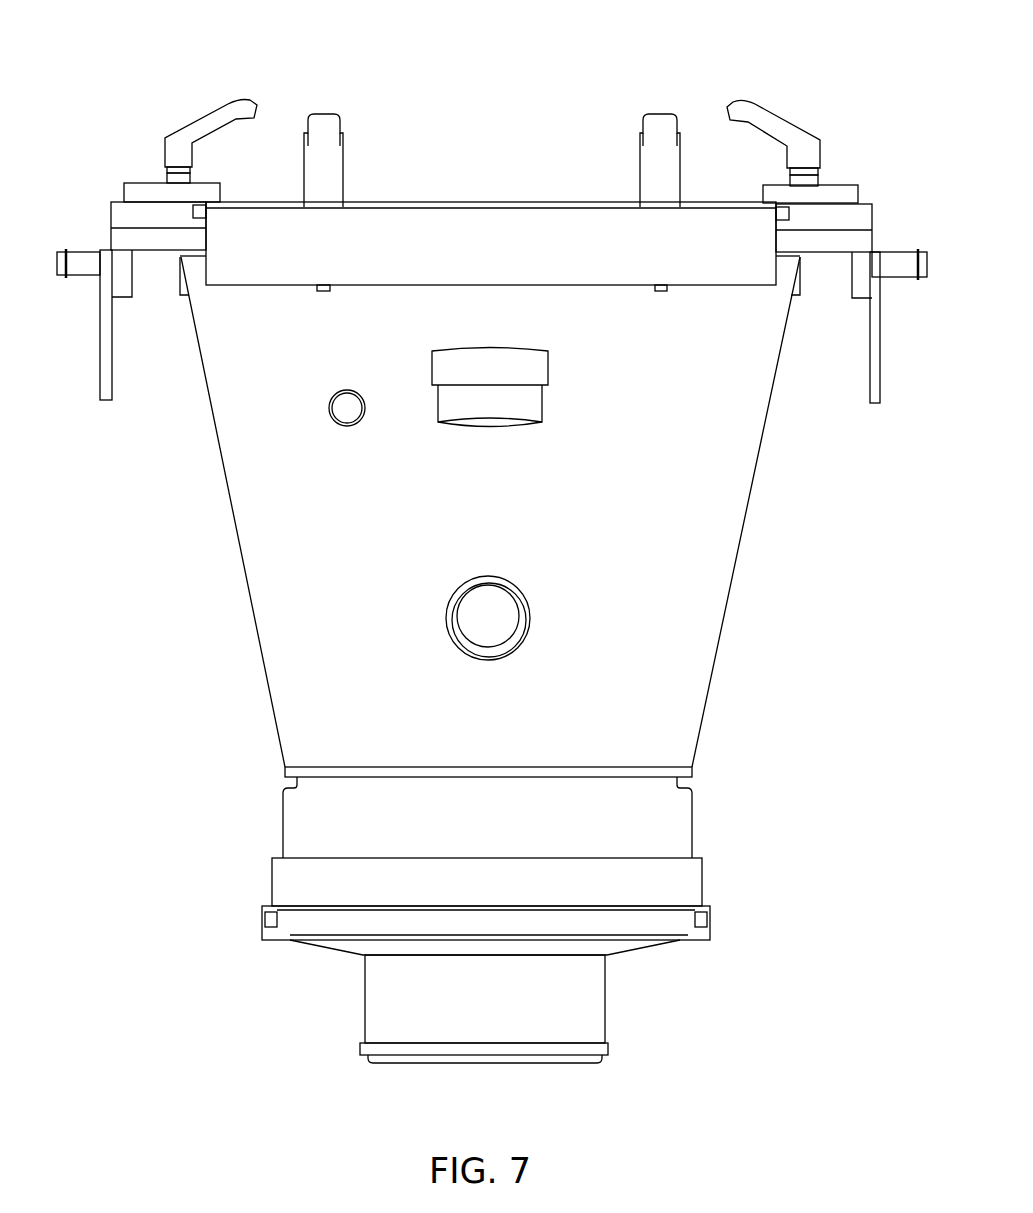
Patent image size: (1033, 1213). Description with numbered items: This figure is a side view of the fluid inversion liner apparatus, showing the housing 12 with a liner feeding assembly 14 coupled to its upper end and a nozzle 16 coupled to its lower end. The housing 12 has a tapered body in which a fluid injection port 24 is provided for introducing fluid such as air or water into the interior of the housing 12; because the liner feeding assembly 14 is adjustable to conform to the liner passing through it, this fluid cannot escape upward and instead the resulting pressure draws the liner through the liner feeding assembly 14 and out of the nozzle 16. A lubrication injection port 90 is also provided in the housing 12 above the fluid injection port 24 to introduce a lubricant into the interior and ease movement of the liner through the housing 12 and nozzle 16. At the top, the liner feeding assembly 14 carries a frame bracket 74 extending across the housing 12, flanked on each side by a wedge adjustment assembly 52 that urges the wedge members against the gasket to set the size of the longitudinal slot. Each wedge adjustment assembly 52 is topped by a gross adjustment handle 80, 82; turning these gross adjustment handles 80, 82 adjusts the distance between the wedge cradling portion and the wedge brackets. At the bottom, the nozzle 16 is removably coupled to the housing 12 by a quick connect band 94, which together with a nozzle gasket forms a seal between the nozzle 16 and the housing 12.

The housing 12 is at (730, 475).
The liner feeding assembly 14 is at (103, 206).
The nozzle 16 is at (605, 1008).
The fluid injection port 24 is at (520, 612).
The wedge adjustment assembly 52 is at (128, 172).
The frame bracket 74 is at (490, 220).
The gross adjustment handle 80 is at (192, 125).
The gross adjustment handle 82 is at (808, 140).
The lubrication injection port 90 is at (538, 392).
The quick connect band 94 is at (707, 915).